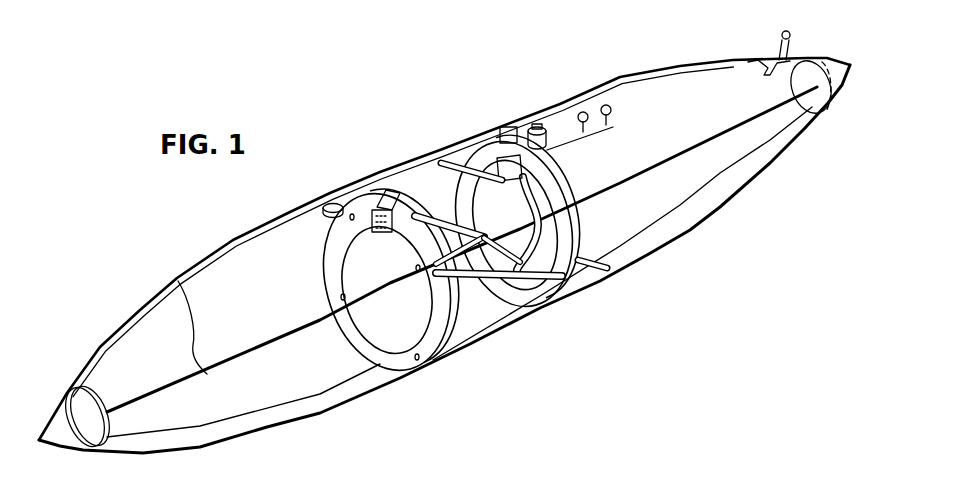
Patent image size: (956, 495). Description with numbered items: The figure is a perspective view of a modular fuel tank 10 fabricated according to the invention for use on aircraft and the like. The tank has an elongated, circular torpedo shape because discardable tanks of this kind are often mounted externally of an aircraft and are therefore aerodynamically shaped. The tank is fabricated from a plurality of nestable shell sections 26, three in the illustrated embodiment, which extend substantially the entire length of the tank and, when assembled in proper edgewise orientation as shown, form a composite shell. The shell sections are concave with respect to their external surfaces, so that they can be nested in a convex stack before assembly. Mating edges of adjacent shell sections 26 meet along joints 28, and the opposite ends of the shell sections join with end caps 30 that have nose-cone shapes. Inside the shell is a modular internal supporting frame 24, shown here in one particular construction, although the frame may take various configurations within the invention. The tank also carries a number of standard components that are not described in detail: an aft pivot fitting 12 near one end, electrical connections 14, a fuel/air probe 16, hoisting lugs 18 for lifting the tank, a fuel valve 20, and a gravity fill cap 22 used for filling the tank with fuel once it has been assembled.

The modular fuel tank 10 is at (500, 117).
The aft pivot fitting 12 is at (775, 55).
The electrical connections 14 is at (608, 105).
The fuel/air probe 16 is at (540, 124).
The hoisting lugs 18 is at (390, 188).
The fuel valve 20 is at (580, 237).
The gravity fill cap 22 is at (330, 205).
The modular internal supporting frame 24 is at (431, 184).
The shell sections 26 is at (233, 258).
The joints 28 is at (178, 282).
The end caps 30 is at (62, 413).